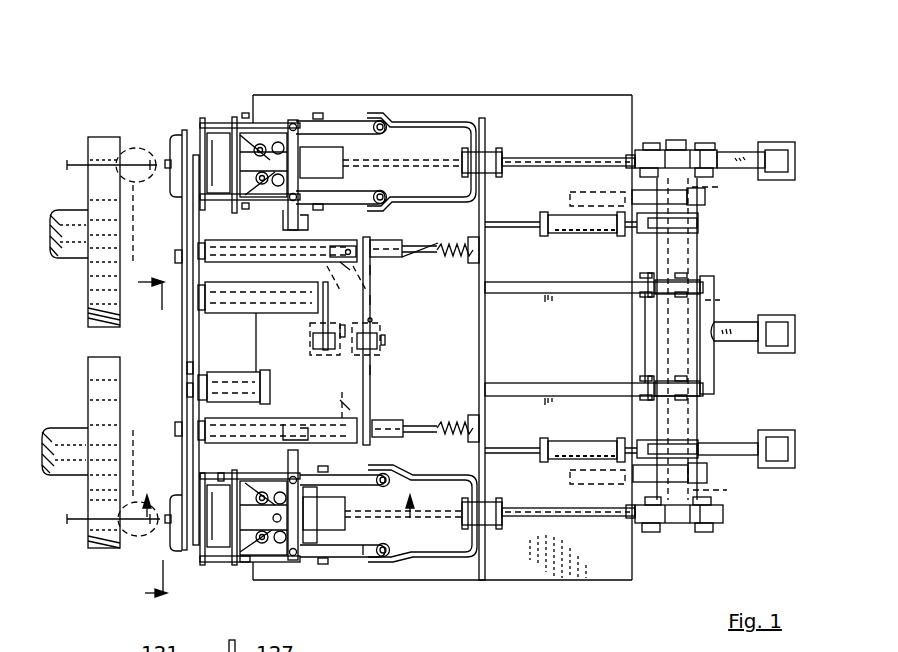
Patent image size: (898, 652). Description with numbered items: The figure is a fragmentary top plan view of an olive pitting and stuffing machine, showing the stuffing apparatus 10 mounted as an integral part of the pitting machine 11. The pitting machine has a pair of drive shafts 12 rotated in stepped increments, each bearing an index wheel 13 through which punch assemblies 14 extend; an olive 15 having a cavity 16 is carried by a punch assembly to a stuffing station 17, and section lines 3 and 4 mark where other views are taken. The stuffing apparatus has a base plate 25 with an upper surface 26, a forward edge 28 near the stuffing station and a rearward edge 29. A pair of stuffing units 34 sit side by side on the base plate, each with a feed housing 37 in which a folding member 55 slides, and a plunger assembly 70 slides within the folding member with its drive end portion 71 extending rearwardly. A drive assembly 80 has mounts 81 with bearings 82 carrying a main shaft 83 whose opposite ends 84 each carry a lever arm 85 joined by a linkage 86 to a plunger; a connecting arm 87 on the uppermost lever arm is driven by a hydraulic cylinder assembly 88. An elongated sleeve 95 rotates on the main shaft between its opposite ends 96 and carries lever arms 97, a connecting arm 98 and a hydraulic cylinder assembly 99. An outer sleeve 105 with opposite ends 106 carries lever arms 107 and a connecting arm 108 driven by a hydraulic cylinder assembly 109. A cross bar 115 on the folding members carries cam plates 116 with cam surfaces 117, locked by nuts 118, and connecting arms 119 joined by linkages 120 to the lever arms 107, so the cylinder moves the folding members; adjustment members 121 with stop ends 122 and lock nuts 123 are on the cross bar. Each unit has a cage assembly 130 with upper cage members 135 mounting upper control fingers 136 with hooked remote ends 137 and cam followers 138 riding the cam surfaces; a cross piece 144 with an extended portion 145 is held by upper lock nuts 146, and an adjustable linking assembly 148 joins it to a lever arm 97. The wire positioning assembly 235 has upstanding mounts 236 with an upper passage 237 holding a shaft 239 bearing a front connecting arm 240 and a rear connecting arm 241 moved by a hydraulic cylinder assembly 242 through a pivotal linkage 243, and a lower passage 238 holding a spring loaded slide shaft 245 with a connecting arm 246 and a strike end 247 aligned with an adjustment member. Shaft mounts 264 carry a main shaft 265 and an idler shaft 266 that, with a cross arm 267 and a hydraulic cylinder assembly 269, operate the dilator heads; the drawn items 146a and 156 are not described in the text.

The section line 3- 3 is at (143, 440).
The section line 4- 4 is at (277, 496).
The stuffing apparatus 10 is at (363, 70).
The pitting machine 11 is at (130, 355).
The drive shafts 12 is at (78, 250).
The index wheel 13 is at (107, 137).
The punch assemblies 14 is at (67, 160).
The olive 15 is at (131, 342).
The cavity 16 is at (150, 183).
The stuffing station 17 is at (150, 125).
The base plate 25 is at (503, 95).
The upper surface 26 is at (598, 337).
The forward edge 28 is at (200, 400).
The rearward edge 29 is at (636, 570).
The stuffing units 34 is at (277, 339).
The feed housing 37 is at (324, 515).
The folding member 55 is at (388, 510).
The plunger assembly 70 is at (538, 158).
The drive end portion 71 is at (622, 155).
The drive assembly 80 is at (777, 143).
The mounts 81 is at (707, 198).
The bearing 82 is at (710, 192).
The main shaft 83 is at (720, 300).
The opposite ends 84 is at (676, 140).
The lever arm 85 is at (718, 152).
The linkage 86 is at (650, 143).
The connecting arm 87 is at (752, 160).
The hydraulic cylinder assembly 88 is at (796, 148).
The elongated sleeve 95 is at (692, 240).
The opposite ends 96 is at (698, 216).
The lever arms 97 is at (698, 228).
The connecting arm 98 is at (718, 445).
The hydraulic cylinder assembly 99 is at (796, 447).
The outer sleeve 105 is at (710, 362).
The opposite ends 106 is at (705, 285).
The lever arms 107 is at (678, 290).
The connecting arm 108 is at (742, 318).
The hydraulic cylinder assembly 109 is at (796, 332).
The cross bar 115 is at (487, 338).
The cam plates 116 is at (430, 121).
The cam surfaces 117 is at (397, 120).
The nuts 118 is at (472, 152).
The connecting arms 119 is at (572, 282).
The linkages 120 is at (648, 383).
The adjustment members 121 is at (479, 258).
The stop end 122 is at (460, 258).
The lock nut 123 is at (480, 233).
The cage assembly 130 is at (304, 75).
The upper cage members 135 is at (363, 557).
The upper control fingers 136 is at (224, 474).
The remote ends 137 is at (220, 563).
The cam follower 138 is at (386, 135).
The cross piece 144 is at (380, 162).
The extended portion 145 is at (288, 215).
The upper lock nuts 146 is at (296, 123).
The pin 146a is at (329, 264).
The adjustable linking assembly 148 is at (528, 222).
The nut 156 is at (355, 616).
The wire positioning assembly 235 is at (382, 338).
The upstanding mounts 236 is at (330, 265).
The upper passage 237 is at (372, 300).
The lower passage 238 is at (328, 300).
The shaft 239 is at (340, 396).
The front connecting arm 240 is at (206, 212).
The rear connecting arm 241 is at (375, 270).
The hydraulic cylinder assembly 242 is at (375, 318).
The pivotal linkage 243 is at (384, 345).
The slide shaft 245 is at (385, 240).
The connecting arm 246 is at (175, 256).
The strike end 247 is at (468, 243).
The shaft mounts 264 is at (277, 252).
The main shaft 265 is at (258, 314).
The idler shaft 266 is at (246, 380).
The cross arm 267 is at (186, 363).
The hydraulic cylinder assembly 269 is at (313, 326).